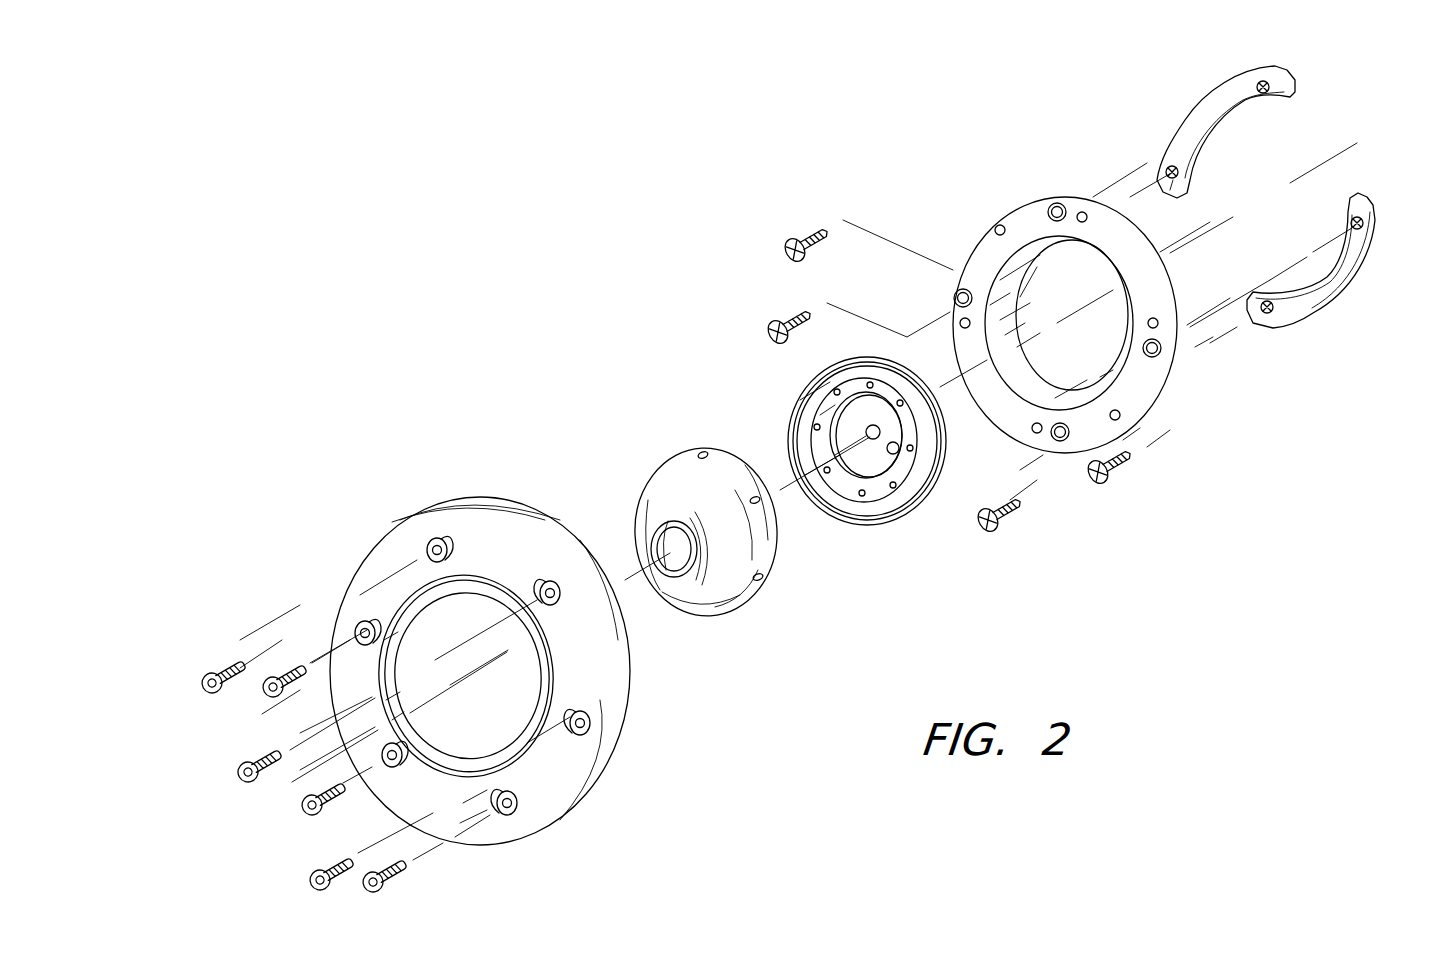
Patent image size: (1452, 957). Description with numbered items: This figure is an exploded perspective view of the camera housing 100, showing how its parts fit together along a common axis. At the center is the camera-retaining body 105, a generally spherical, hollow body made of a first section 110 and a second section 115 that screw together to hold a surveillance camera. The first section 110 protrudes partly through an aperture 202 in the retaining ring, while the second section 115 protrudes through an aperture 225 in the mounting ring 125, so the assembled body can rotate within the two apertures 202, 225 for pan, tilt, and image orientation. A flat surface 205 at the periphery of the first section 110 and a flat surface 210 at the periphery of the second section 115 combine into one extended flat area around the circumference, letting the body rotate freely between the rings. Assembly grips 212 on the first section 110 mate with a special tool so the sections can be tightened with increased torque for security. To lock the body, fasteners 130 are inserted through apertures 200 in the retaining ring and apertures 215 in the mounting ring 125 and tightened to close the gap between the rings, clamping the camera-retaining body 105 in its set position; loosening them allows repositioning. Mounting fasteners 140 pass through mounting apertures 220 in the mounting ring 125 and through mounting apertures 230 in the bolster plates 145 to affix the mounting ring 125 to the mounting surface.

The camera housing 100 is at (502, 224).
The camera-retaining body 105 is at (936, 613).
The first section 110 is at (710, 614).
The second section 115 is at (922, 500).
The mounting ring 125 is at (1164, 392).
The fasteners 130 is at (440, 889).
The mounting fasteners 140 is at (794, 238).
The bolster plates 145 is at (1203, 100).
The apertures 200 is at (430, 538).
The aperture 202 is at (428, 636).
The flat surface 205 is at (689, 447).
The flat surface 210 is at (866, 528).
The assembly grips 212 is at (703, 451).
The apertures 215 is at (1083, 210).
The mounting apertures 220 is at (1054, 204).
The aperture 225 is at (1090, 277).
The mounting apertures 230 is at (1276, 82).